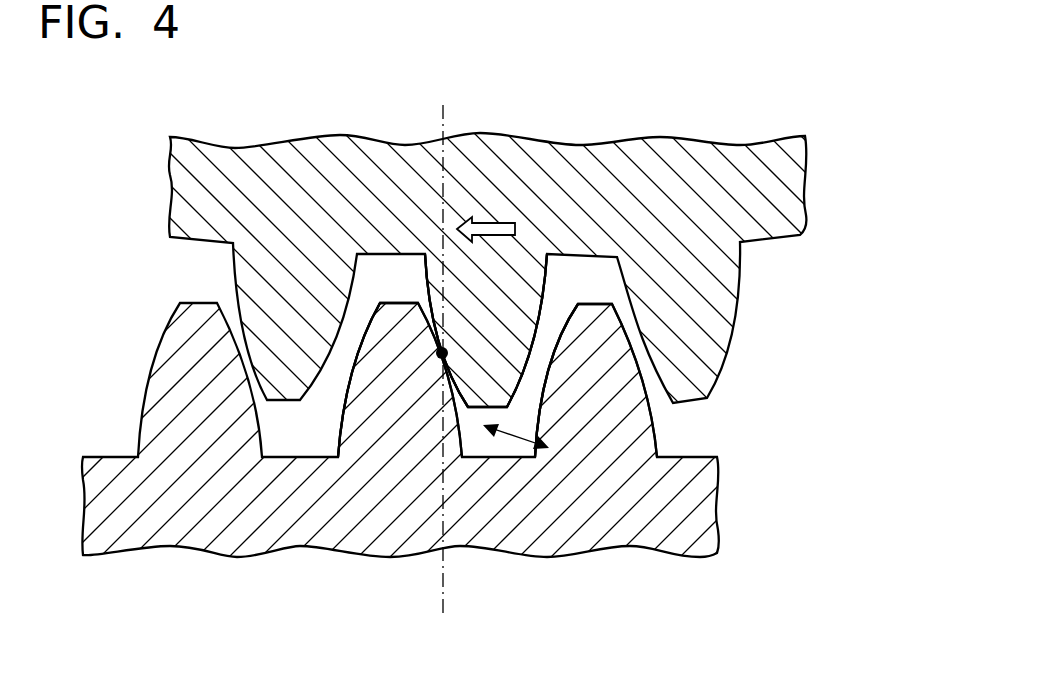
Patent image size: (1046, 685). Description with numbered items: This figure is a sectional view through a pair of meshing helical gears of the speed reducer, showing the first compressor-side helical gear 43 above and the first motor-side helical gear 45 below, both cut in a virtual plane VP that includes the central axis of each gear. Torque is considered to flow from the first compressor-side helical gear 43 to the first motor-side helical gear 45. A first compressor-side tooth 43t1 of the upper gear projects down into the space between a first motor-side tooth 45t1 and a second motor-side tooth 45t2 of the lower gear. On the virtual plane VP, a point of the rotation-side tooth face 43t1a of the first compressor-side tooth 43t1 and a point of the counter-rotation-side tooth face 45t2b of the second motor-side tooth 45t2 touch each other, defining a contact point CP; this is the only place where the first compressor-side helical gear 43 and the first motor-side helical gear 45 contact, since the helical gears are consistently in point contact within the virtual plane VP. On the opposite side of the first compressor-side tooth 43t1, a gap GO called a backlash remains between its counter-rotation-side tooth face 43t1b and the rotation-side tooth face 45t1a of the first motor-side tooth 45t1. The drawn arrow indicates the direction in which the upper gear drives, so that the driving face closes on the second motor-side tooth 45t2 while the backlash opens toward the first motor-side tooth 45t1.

The first compressor-side helical gear 43 is at (763, 186).
The first motor-side helical gear 45 is at (700, 517).
The first compressor-side tooth 43t1 is at (507, 310).
The rotation-side tooth face 43t1a is at (425, 273).
The counter-rotation-side tooth face 43t1b is at (547, 282).
The first motor-side tooth 45t1 is at (593, 395).
The rotation-side tooth face 45t1a is at (556, 322).
The second motor-side tooth 45t2 is at (387, 383).
The counter-rotation-side tooth face 45t2b is at (378, 305).
The virtual plane VP is at (443, 108).
The contact point CP is at (442, 353).
The gap (backlash) GO is at (510, 428).